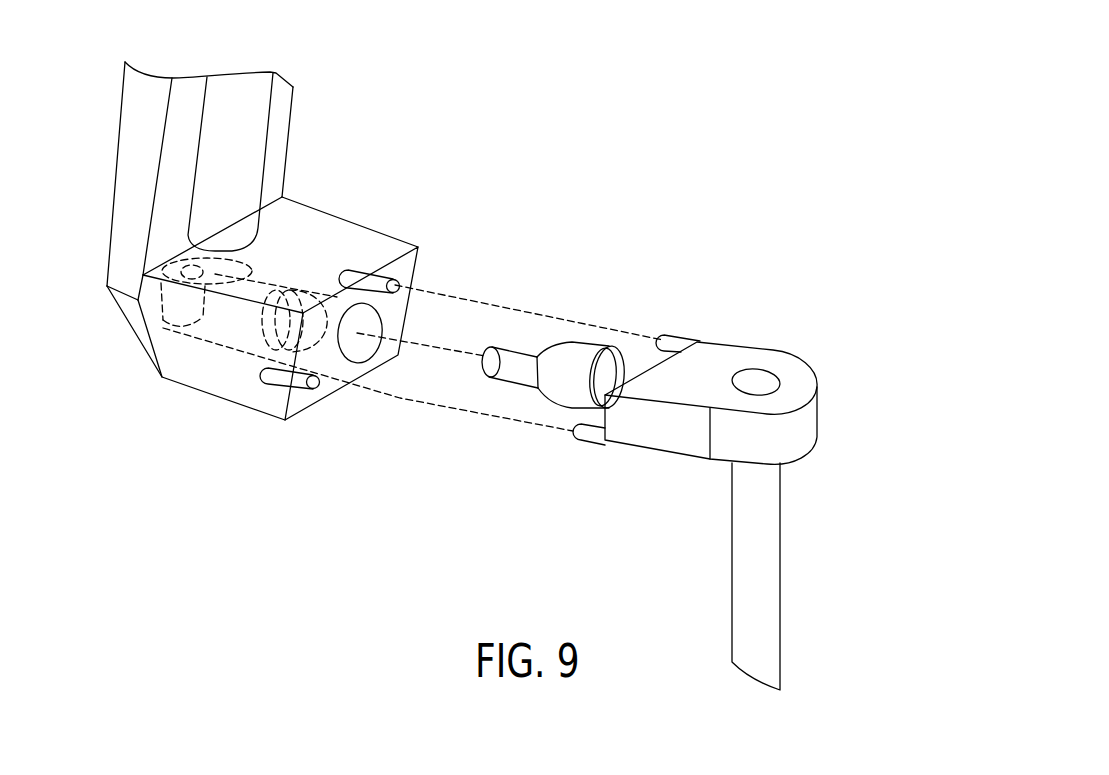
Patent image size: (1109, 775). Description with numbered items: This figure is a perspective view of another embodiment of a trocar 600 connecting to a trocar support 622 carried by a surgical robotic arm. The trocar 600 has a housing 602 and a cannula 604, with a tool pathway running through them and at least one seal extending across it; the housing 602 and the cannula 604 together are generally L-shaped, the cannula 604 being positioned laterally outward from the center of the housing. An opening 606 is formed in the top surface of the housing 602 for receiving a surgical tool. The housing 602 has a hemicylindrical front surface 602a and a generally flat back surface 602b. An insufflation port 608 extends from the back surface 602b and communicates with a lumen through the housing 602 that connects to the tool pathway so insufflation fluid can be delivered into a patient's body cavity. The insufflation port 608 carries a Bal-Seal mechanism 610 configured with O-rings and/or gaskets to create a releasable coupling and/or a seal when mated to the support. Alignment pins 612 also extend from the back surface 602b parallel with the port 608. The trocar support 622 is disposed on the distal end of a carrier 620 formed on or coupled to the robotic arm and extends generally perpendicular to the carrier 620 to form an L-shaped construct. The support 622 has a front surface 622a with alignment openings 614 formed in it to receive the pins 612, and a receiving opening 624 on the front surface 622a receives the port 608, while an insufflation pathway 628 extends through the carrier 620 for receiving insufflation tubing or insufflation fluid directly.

The trocar 600 is at (866, 424).
The housing 602 is at (807, 362).
The front surface 602a is at (807, 410).
The back surface 602b is at (615, 440).
The cannula 604 is at (767, 577).
The opening 606 is at (758, 380).
The insufflation port 608 is at (513, 350).
The Bal-Seal mechanism 610 is at (584, 322).
The alignment pins 612 is at (667, 337).
The alignment openings 614 is at (398, 280).
The carrier 620 is at (318, 141).
The trocar support 622 is at (193, 420).
The front surface 622a is at (427, 302).
The receiving opening 624 is at (353, 345).
The insufflation pathway 628 is at (187, 227).